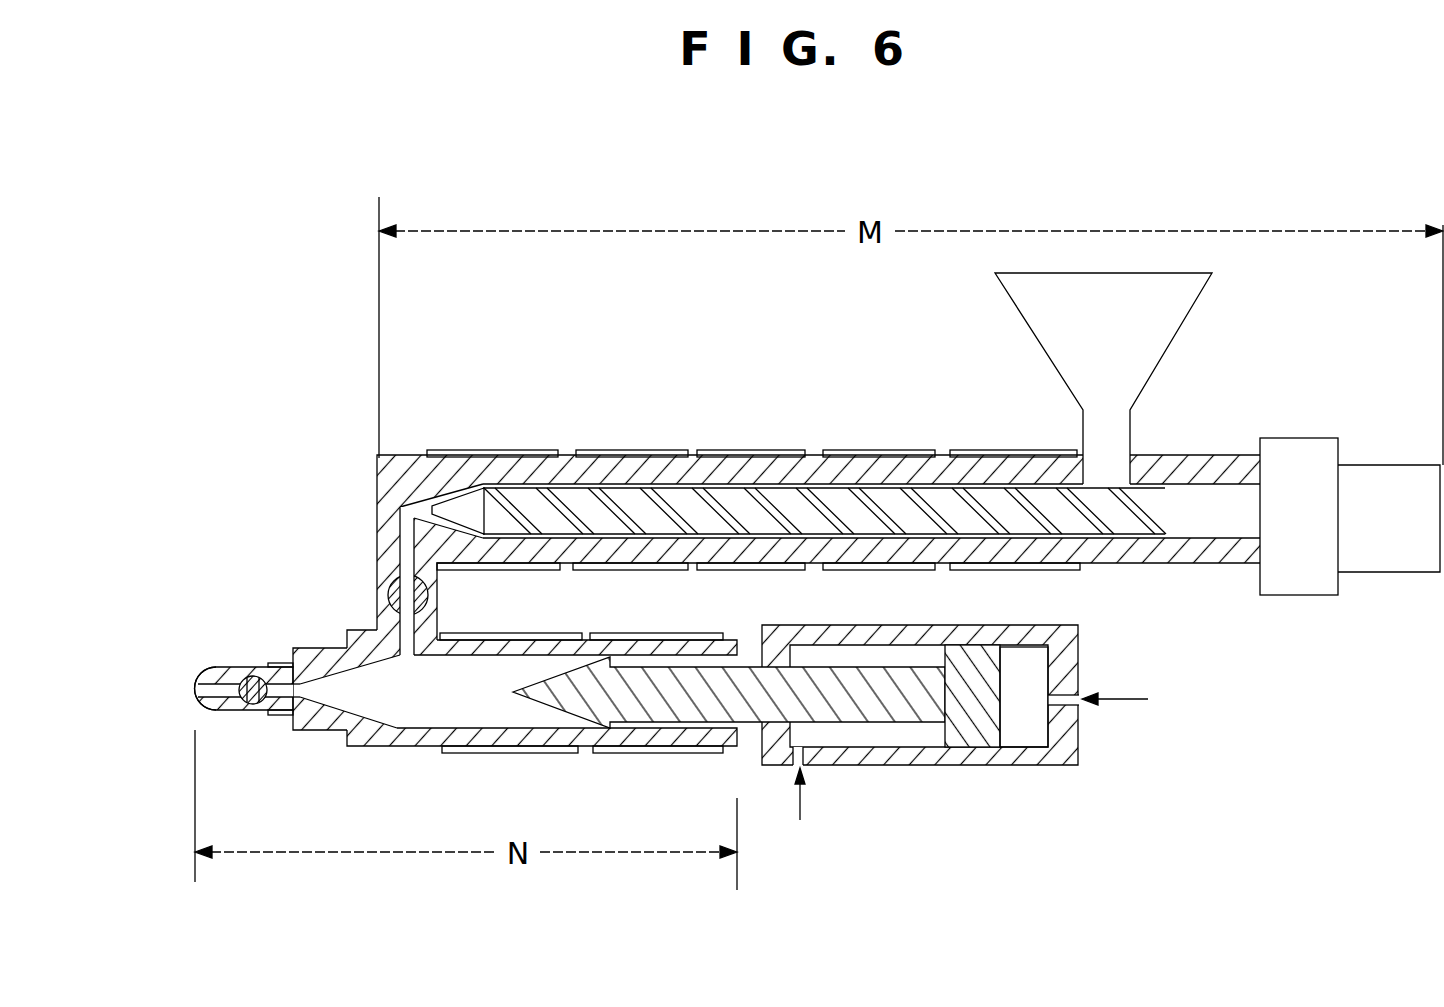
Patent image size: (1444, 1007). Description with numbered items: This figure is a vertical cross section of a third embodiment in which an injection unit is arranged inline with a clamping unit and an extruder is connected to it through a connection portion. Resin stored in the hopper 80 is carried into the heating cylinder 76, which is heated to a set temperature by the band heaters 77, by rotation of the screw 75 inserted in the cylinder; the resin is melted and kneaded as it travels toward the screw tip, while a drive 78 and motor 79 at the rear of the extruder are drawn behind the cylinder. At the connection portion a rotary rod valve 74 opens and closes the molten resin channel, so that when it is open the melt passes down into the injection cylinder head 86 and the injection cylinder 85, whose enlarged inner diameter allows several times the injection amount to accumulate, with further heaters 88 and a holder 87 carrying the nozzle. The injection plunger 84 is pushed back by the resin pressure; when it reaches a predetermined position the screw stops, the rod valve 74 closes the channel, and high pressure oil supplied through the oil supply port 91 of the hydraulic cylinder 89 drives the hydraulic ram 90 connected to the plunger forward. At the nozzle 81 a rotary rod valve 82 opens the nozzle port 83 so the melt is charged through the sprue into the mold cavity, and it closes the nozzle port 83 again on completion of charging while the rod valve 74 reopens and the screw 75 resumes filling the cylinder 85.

The rod valve 74 is at (392, 590).
The screw 75 is at (872, 500).
The heating cylinder 76 is at (697, 470).
The band heater 77 is at (627, 450).
The screw drive unit 78 is at (1297, 472).
The motor 79 is at (1387, 490).
The hopper 80 is at (1127, 357).
The nozzle 81 is at (228, 678).
The rotary rod valve 82 is at (252, 703).
The nozzle port 83 is at (197, 690).
The injection plunger 84 is at (612, 700).
The injection cylinder 85 is at (556, 735).
The injection cylinder head 86 is at (363, 735).
The nozzle holder 87 is at (313, 732).
The heaters 88 is at (503, 753).
The hydraulic cylinder 89 is at (868, 756).
The hydraulic ram 90 is at (955, 697).
The oil supply port 91 is at (1138, 699).